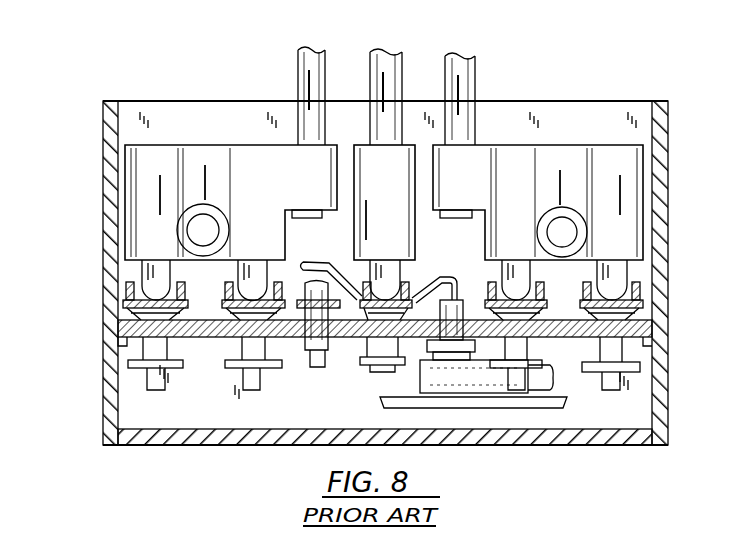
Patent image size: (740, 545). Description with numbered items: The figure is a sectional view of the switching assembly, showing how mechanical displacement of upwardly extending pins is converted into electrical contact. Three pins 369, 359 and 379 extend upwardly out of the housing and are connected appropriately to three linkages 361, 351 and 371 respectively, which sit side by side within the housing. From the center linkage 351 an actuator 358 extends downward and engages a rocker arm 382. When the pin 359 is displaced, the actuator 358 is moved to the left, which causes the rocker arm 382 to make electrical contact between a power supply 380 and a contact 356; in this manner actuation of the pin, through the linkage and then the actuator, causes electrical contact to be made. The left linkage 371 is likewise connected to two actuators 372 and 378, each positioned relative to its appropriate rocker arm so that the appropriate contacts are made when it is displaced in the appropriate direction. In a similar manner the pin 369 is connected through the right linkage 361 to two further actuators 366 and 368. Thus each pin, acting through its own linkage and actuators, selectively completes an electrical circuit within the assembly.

The pin 379 is at (298, 68).
The pin 359 is at (390, 60).
The pin 369 is at (478, 78).
The linkage 371 is at (279, 182).
The linkage 351 is at (398, 193).
The linkage 361 is at (513, 188).
The actuator 378 is at (150, 283).
The actuator 372 is at (250, 278).
The actuator 358 is at (385, 275).
The actuator 368 is at (515, 277).
The actuator 366 is at (612, 290).
The rocker arm 382 is at (330, 262).
The contact 356 is at (298, 312).
The power supply 380 is at (368, 345).